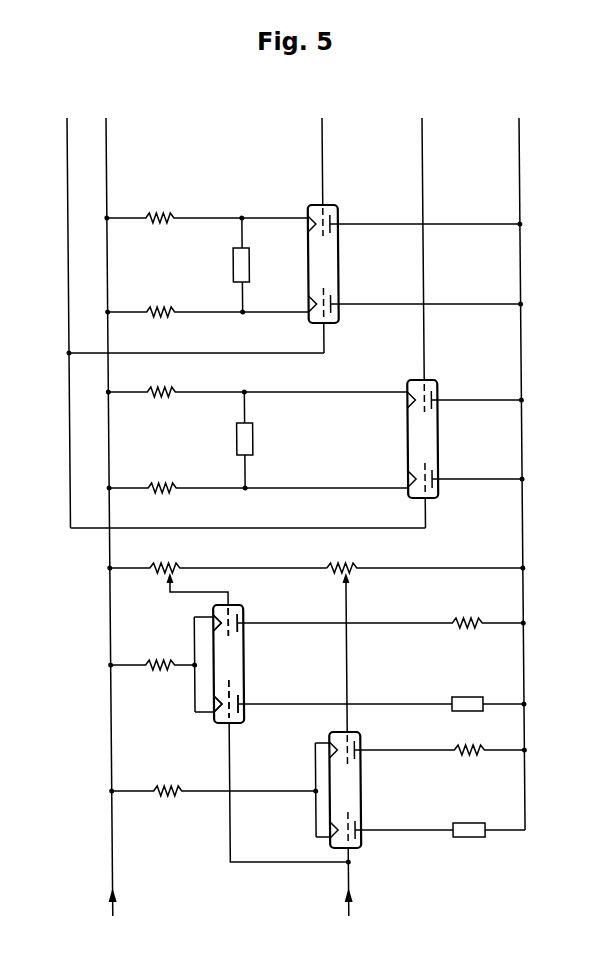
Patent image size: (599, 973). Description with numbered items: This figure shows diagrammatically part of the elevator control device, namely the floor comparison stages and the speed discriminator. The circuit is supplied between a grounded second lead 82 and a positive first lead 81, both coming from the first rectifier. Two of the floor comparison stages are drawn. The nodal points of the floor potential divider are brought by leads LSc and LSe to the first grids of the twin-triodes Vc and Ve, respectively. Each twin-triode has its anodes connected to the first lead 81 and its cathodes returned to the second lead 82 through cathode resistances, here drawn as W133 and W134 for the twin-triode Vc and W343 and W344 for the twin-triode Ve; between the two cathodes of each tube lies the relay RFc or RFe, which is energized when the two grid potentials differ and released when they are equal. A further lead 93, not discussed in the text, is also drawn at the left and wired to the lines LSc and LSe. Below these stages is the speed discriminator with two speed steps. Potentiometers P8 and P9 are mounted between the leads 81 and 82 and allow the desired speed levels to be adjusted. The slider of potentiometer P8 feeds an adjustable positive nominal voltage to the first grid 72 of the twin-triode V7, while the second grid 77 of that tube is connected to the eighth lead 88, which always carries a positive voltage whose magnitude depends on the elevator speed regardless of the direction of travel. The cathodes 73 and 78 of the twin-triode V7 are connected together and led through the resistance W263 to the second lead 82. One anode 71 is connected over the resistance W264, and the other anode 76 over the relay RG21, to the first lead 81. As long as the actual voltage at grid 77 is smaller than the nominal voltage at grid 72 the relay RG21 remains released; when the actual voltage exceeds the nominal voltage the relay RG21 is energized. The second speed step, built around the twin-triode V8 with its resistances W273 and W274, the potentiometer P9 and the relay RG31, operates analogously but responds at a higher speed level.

The common return line 93 is at (66, 121).
The second lead 82 is at (106, 127).
The first lead 81 is at (518, 128).
The lead LSc is at (321, 128).
The lead LSe is at (421, 128).
The resistor W133 is at (156, 214).
The resistor W134 is at (160, 320).
The relay RFc is at (231, 268).
The twin-triode Vc is at (330, 273).
The resistor W343 is at (158, 388).
The resistor W344 is at (160, 484).
The relay RFe is at (233, 443).
The twin-triode Ve is at (428, 448).
The potentiometer P8 is at (160, 565).
The potentiometer P9 is at (337, 565).
The twin-triode V7 is at (232, 668).
The first grid 72 is at (224, 610).
The cathode 73 is at (210, 615).
The anode 71 is at (238, 620).
The anode 76 is at (235, 702).
The second grid 77 is at (233, 724).
The cathode 78 is at (212, 723).
The resistance W263 is at (166, 661).
The resistance W264 is at (463, 617).
The relay RG21 is at (483, 691).
The resistor W273 is at (167, 786).
The resistor W274 is at (461, 754).
The relay RG31 is at (478, 816).
The twin-triode V8 is at (347, 801).
The eighth lead 88 is at (342, 913).